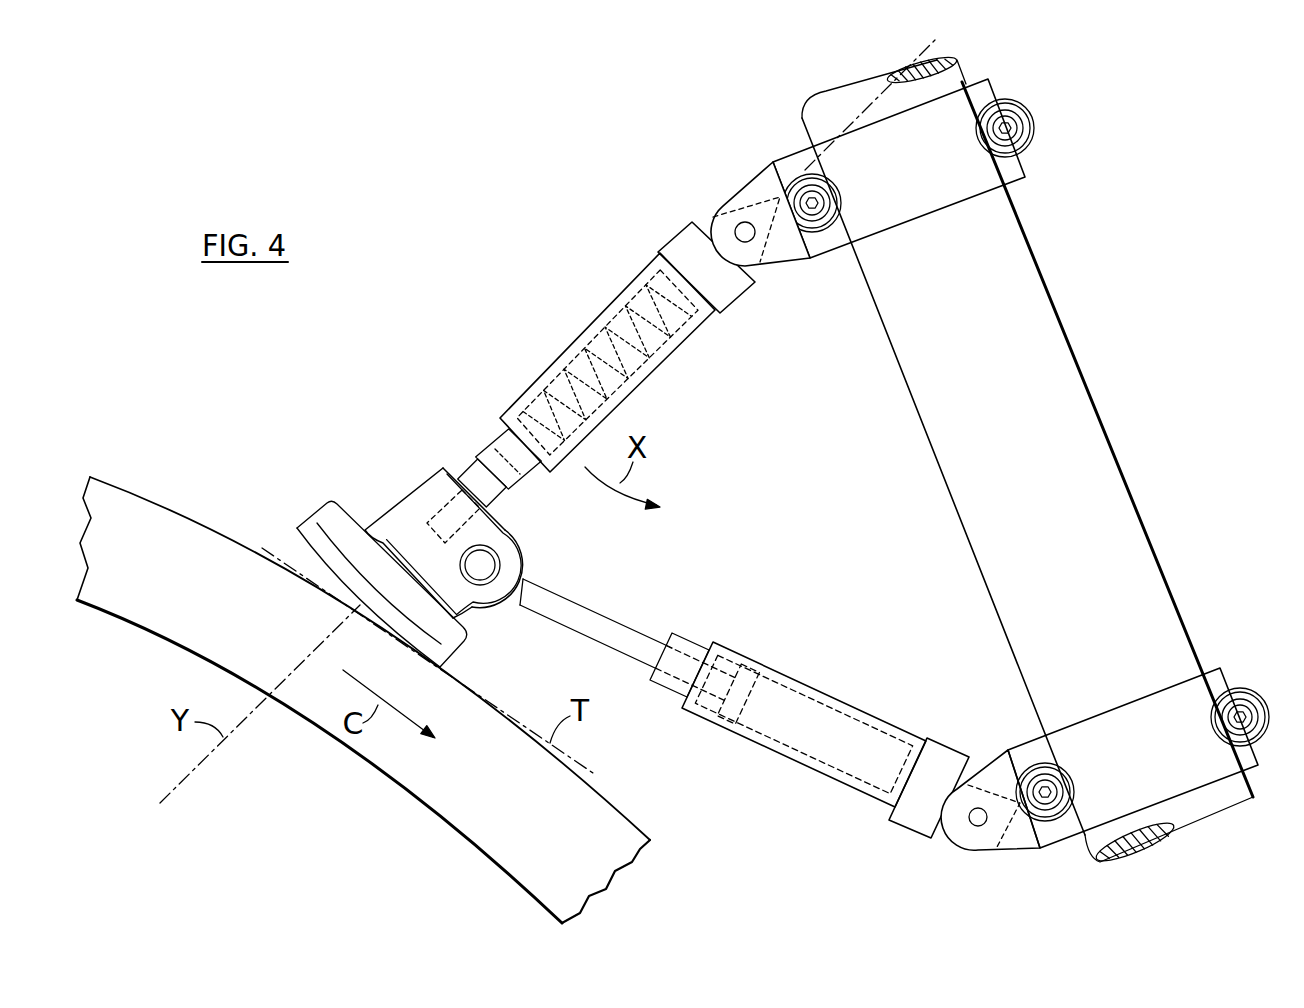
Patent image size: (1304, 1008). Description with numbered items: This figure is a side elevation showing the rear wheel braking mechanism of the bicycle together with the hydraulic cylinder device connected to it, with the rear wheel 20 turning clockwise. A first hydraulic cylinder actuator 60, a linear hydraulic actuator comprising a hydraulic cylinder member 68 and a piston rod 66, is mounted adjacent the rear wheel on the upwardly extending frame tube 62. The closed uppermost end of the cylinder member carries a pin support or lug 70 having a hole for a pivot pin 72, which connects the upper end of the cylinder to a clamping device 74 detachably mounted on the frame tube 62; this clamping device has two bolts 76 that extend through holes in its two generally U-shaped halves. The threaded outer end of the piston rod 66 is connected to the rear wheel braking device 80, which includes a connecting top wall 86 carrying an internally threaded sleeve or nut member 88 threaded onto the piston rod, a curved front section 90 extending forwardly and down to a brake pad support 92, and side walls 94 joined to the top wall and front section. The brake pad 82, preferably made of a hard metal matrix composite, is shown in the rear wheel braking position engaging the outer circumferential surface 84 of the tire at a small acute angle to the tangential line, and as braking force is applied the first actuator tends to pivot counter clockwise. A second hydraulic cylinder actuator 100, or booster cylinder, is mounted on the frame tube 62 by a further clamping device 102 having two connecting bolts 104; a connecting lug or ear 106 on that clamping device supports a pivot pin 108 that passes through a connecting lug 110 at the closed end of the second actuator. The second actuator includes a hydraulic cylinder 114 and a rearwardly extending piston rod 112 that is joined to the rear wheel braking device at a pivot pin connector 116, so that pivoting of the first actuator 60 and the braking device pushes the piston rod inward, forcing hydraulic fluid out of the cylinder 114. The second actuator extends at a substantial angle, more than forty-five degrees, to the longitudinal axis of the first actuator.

The rear wheel 20 is at (543, 876).
The first hydraulic cylinder actuator 60 is at (670, 363).
The frame tube 62 is at (1080, 397).
The piston rod 66 is at (477, 470).
The hydraulic cylinder member 68 is at (587, 337).
The pin support or lug 70 is at (750, 268).
The pivot pin 72 is at (740, 223).
The clamping device 74 is at (1023, 172).
The bolts 76 is at (1018, 126).
The rear wheel braking device 80 is at (523, 553).
The brake pad 82 is at (300, 542).
The outer circumferential surface 84 is at (617, 813).
The connecting top wall 86 is at (455, 472).
The internally threaded sleeve or nut member 88 is at (498, 503).
The curved front section 90 is at (525, 580).
The brake pad support 92 is at (473, 612).
The side walls 94 is at (408, 507).
The second hydraulic cylinder actuator 100 is at (777, 680).
The clamping device 102 is at (1143, 707).
The connecting bolts 104 is at (1040, 786).
The connecting lug or ear 106 is at (1018, 833).
The pivot pin 108 is at (977, 827).
The connecting lug 110 is at (931, 840).
The piston rod 112 is at (635, 640).
The hydraulic cylinder 114 is at (865, 723).
The pivot pin connector 116 is at (483, 565).